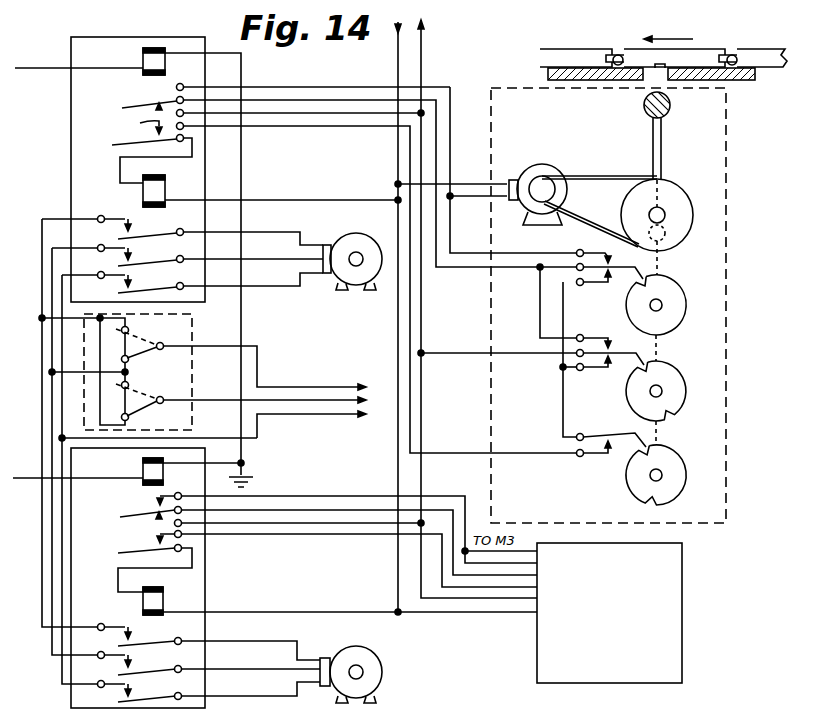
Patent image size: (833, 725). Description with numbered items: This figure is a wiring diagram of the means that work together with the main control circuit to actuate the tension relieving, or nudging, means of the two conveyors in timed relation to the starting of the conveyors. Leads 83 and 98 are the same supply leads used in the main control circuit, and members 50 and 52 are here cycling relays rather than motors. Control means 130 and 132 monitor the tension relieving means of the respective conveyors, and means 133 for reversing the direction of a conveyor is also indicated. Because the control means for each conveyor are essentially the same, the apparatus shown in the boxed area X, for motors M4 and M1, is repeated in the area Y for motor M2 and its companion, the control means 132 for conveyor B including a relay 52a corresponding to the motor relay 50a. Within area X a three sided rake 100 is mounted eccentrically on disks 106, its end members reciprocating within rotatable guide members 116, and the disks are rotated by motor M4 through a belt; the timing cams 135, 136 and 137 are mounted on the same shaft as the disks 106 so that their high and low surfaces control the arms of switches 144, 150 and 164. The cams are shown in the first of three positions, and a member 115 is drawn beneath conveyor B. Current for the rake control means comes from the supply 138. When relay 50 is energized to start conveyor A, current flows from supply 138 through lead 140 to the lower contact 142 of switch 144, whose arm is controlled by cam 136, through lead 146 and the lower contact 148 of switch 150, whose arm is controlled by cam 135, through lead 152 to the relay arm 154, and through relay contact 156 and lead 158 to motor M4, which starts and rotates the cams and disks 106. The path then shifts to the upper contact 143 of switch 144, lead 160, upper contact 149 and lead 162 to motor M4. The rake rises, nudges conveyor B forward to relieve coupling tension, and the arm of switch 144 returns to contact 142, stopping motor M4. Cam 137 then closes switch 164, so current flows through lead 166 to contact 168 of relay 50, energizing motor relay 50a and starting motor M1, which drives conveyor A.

The lead 83 is at (47, 68).
The lead 98 is at (28, 480).
The control means 130 is at (124, 29).
The cycling relay 50 is at (153, 48).
The motor relay 50a is at (143, 190).
The relay contact 156 is at (159, 93).
The relay arm 154 is at (122, 108).
The relay contact 168 is at (140, 123).
The lead 158 is at (272, 87).
The lead 152 is at (330, 100).
The lead 162 is at (470, 250).
The source of supply 138 is at (410, 18).
The lead 140 is at (430, 58).
The lead 166 is at (452, 452).
The lead 146 is at (560, 303).
The lead 160 is at (538, 337).
The upper contact 149 is at (578, 252).
The lower contact 148 is at (612, 272).
The upper contact 143 is at (618, 345).
The lower contact 142 is at (606, 360).
The switch 144 is at (618, 366).
The switch 164 is at (621, 447).
The reversing means 133 is at (192, 323).
The motor M1 is at (365, 233).
The motor M2 is at (380, 652).
The motor M4 is at (543, 163).
The switch 150 is at (619, 252).
The disks 106 is at (682, 207).
The three sided rake 100 is at (668, 151).
The rotatable guide members 116 is at (670, 110).
The conveyor B is at (760, 49).
The support surface 115 is at (745, 80).
The boxed area X is at (727, 337).
The timing cam 135 is at (680, 292).
The timing cam 136 is at (677, 381).
The timing cam 137 is at (677, 462).
The area Y is at (682, 600).
The cycling relay 52 is at (143, 466).
The relay holding coil 52a is at (143, 604).
The control means 132 is at (205, 576).